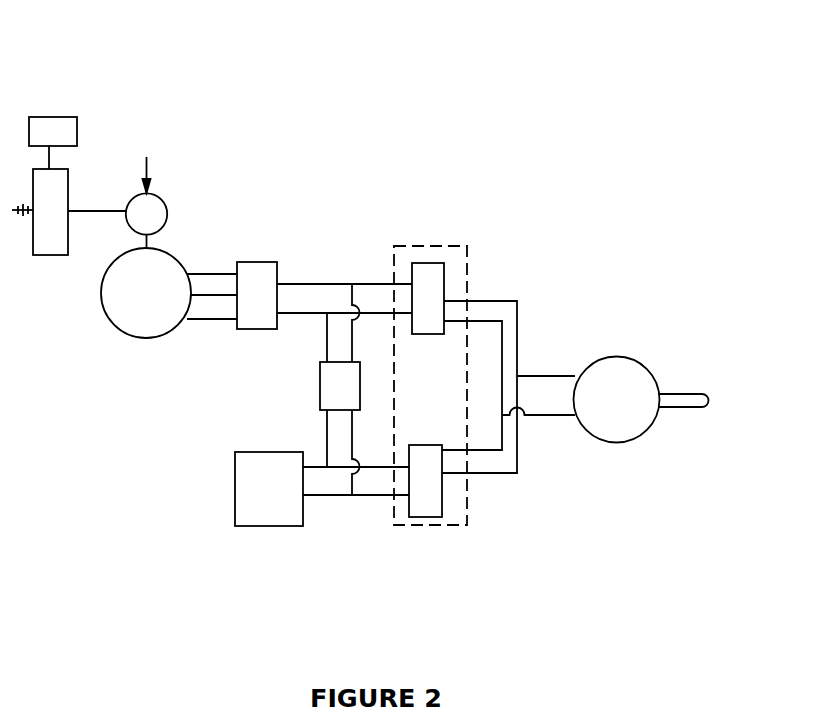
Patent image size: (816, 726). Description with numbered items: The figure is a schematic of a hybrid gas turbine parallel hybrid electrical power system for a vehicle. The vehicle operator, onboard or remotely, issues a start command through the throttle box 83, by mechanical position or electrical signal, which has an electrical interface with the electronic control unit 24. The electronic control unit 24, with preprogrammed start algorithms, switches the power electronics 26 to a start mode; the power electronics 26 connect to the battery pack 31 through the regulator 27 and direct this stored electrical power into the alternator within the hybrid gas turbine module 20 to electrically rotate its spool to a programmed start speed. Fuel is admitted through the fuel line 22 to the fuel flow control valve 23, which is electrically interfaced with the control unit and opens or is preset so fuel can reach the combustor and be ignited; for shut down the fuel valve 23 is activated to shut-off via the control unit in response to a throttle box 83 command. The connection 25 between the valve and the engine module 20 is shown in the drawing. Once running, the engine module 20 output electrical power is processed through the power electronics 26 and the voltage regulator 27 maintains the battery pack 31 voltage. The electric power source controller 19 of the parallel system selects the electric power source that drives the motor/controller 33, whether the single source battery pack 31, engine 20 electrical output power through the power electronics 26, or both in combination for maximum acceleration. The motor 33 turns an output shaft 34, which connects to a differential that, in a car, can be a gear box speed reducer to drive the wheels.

The electric power source controller 19 is at (452, 247).
The hybrid gas turbine module 20 is at (113, 300).
The fuel line 22 is at (154, 160).
The fuel flow control valve 23 is at (158, 205).
The electronic control unit 24 is at (58, 254).
The connecting line 25 is at (147, 242).
The power electronics 26 is at (252, 313).
The regulator 27 is at (332, 393).
The battery pack 31 is at (260, 522).
The motor/controller 33 is at (619, 429).
The motor output shaft 34 is at (681, 393).
The throttle box 83 is at (57, 117).